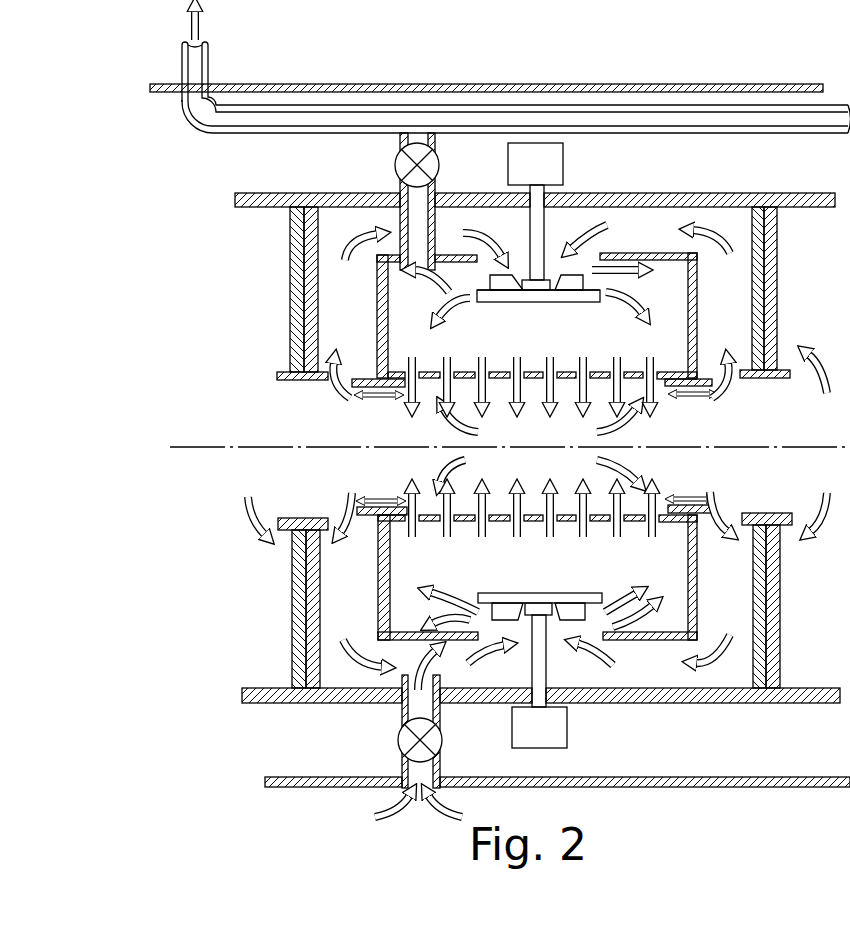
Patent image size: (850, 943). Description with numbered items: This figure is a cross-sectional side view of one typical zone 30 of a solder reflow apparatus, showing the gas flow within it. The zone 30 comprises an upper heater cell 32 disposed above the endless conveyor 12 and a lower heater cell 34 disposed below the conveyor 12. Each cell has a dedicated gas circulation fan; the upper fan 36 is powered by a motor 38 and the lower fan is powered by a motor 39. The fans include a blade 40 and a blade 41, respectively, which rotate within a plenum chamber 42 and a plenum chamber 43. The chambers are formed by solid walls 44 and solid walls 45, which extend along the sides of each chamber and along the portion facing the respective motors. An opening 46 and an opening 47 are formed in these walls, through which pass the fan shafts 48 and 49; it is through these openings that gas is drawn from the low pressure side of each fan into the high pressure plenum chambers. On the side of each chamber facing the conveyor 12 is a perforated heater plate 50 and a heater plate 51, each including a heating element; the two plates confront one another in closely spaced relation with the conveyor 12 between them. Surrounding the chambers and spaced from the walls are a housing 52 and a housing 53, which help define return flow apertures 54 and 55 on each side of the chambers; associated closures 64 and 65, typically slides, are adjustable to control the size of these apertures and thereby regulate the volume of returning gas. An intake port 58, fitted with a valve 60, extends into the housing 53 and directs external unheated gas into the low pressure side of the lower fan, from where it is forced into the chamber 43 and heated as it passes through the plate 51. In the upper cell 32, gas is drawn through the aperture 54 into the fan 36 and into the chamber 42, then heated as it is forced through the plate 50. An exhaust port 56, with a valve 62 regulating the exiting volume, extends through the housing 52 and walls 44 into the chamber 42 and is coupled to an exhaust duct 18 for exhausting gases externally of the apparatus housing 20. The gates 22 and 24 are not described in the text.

The endless conveyor 12 is at (176, 447).
The exhaust duct 18 is at (238, 136).
The housing 20 is at (285, 78).
The gate 22 is at (403, 390).
The gate 24 is at (396, 506).
The zone 30 is at (118, 370).
The upper heater cell 32 is at (488, 293).
The lower heater cell 34 is at (258, 630).
The fan 36 is at (585, 304).
The motor 38 is at (563, 150).
The motor 39 is at (567, 715).
The blade 40 is at (505, 302).
The blade 41 is at (510, 592).
The plenum chamber 42 is at (400, 349).
The plenum chamber 43 is at (406, 579).
The solid walls 44 is at (698, 315).
The solid walls 45 is at (698, 556).
The opening 46 is at (516, 272).
The opening 47 is at (516, 626).
The shaft 48 is at (545, 206).
The shaft 49 is at (548, 650).
The heater plate 50 is at (668, 390).
The heater plate 51 is at (673, 504).
The housing 52 is at (742, 192).
The housing 53 is at (687, 703).
The return flow aperture 54 is at (330, 392).
The return flow aperture 55 is at (336, 512).
The exhaust port 56 is at (402, 271).
The intake port 58 is at (418, 680).
The valve 60 is at (397, 742).
The valve 62 is at (396, 168).
The closure 64 is at (368, 378).
The closure 65 is at (366, 522).